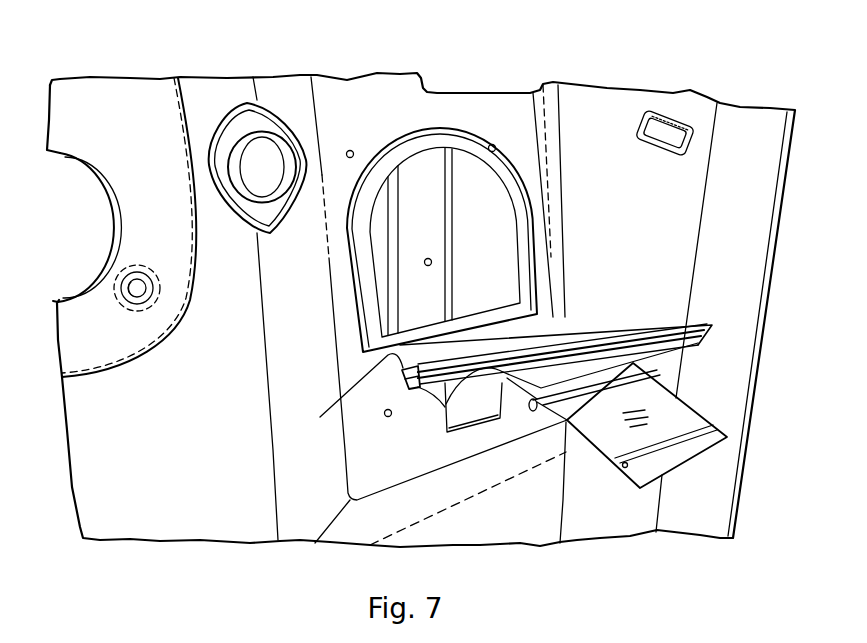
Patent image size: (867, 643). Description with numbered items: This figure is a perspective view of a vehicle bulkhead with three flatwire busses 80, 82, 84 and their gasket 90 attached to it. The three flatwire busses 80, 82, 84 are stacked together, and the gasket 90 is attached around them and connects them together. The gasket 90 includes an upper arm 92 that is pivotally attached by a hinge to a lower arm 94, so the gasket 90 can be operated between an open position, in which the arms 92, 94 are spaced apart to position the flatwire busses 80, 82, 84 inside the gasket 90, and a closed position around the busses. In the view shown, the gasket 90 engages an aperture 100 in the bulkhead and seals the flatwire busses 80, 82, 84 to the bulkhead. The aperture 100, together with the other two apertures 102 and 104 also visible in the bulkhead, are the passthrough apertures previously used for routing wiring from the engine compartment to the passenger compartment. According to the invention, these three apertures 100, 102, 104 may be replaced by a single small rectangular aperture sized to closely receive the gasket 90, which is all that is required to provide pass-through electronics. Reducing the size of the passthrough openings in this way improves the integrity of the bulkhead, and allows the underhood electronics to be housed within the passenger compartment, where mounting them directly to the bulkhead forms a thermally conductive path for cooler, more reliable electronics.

The flatwire bus 80 is at (637, 483).
The flatwire bus 82 is at (700, 338).
The flatwire bus 84 is at (617, 323).
The gasket 90 is at (557, 332).
The upper arm 92 is at (398, 372).
The lower arm 94 is at (404, 390).
The aperture 100 is at (502, 187).
The aperture 102 is at (245, 152).
The aperture 104 is at (83, 167).